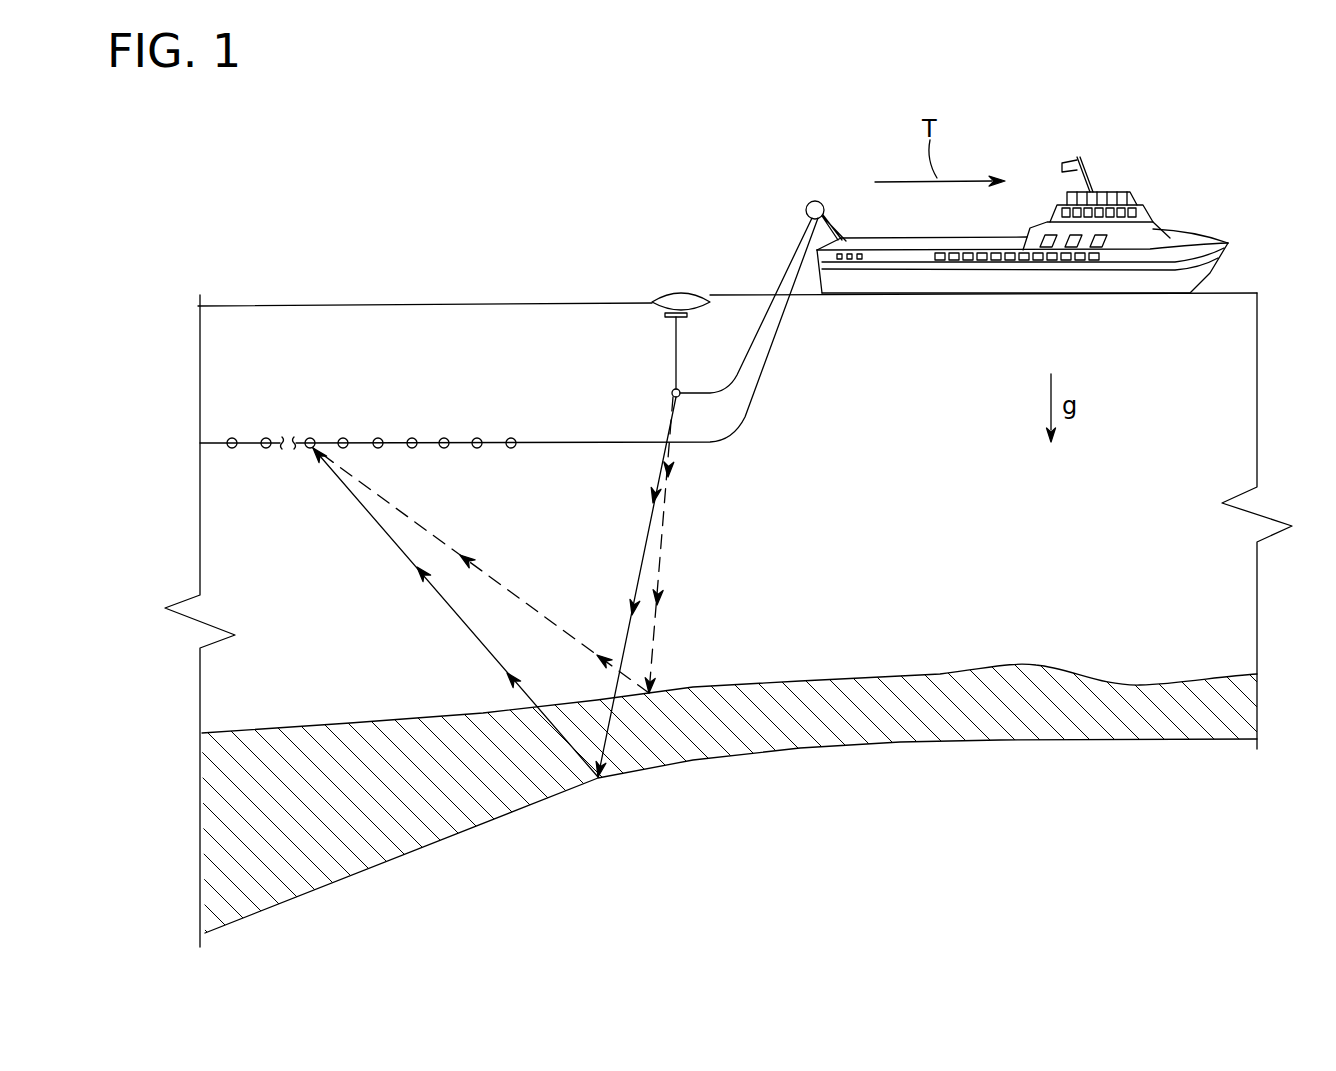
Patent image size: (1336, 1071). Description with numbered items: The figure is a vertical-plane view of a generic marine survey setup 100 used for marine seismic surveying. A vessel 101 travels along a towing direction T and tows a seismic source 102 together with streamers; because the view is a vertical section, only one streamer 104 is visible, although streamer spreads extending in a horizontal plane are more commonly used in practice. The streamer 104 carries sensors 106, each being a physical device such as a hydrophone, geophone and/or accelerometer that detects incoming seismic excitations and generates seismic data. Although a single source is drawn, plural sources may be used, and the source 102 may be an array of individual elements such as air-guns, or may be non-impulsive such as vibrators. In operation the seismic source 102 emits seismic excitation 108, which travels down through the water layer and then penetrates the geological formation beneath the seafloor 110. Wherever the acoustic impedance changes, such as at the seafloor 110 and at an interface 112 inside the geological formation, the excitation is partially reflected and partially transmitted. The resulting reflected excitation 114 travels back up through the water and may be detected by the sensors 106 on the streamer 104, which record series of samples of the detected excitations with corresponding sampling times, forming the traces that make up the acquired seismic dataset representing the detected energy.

The marine survey setup 100 is at (250, 195).
The vessel 101 is at (1200, 230).
The seismic source 102 is at (672, 393).
The streamer 104 is at (250, 440).
The sensors 106 is at (310, 437).
The seismic excitation 108 is at (645, 540).
The seafloor 110 is at (1005, 665).
The interface 112 is at (1069, 741).
The reflected excitation 114 is at (443, 607).